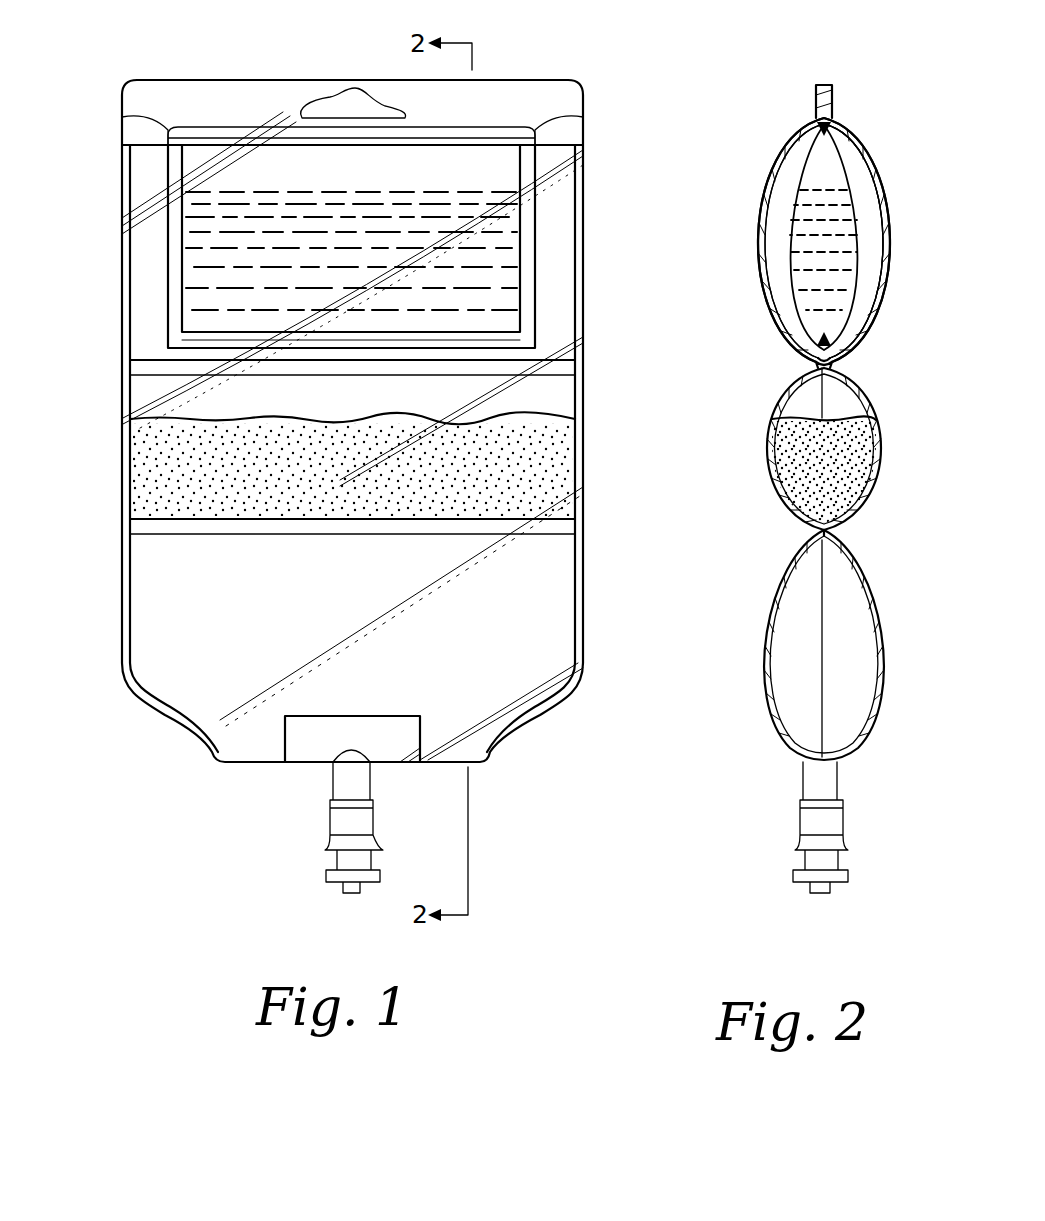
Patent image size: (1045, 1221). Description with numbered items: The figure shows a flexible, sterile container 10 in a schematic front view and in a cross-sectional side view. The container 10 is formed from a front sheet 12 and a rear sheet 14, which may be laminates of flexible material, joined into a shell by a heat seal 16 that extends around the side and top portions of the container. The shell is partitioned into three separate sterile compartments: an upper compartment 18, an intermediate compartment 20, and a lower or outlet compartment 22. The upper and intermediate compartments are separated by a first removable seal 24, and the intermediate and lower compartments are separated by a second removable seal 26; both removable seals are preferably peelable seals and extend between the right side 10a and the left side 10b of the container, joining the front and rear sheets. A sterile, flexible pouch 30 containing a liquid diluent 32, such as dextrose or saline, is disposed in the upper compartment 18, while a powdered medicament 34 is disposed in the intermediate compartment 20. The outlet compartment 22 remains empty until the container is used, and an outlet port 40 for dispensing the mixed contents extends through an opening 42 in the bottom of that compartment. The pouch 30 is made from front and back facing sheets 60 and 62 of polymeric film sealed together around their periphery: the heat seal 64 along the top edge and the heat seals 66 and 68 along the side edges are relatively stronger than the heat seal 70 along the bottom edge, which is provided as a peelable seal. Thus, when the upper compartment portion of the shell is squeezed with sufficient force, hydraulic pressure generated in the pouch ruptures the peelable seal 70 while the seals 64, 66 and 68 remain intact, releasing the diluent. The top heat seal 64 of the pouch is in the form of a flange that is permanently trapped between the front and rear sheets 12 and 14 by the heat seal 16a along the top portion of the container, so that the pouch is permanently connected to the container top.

In FIG. 1, the container 10 is at (114, 68).
In FIG. 2, the container 10 is at (758, 116).
In FIG. 1, the right side 10a is at (584, 484).
In FIG. 1, the left side 10b is at (122, 487).
In FIG. 2, the front sheet 12 is at (760, 287).
In FIG. 2, the rear sheet 14 is at (890, 268).
In FIG. 1, the heat seal 16 is at (122, 340).
In FIG. 2, the heat seal 16 is at (840, 403).
In FIG. 1, the heat seal along the top portion 16a is at (222, 138).
In FIG. 2, the heat seal along the top portion 16a is at (832, 103).
In FIG. 1, the upper compartment 18 is at (558, 222).
In FIG. 2, the upper compartment 18 is at (858, 180).
In FIG. 1, the intermediate compartment 20 is at (152, 388).
In FIG. 1, the lower or outlet compartment 22 is at (540, 588).
In FIG. 2, the lower or outlet compartment 22 is at (836, 600).
In FIG. 1, the first removable seal 24 is at (245, 370).
In FIG. 1, the second removable seal 26 is at (222, 532).
In FIG. 1, the pouch 30 is at (165, 240).
In FIG. 2, the pouch 30 is at (858, 225).
In FIG. 2, the liquid diluent 32 is at (772, 205).
In FIG. 1, the powdered medicament 34 is at (525, 484).
In FIG. 2, the powdered medicament 34 is at (836, 455).
In FIG. 1, the outlet port 40 is at (338, 816).
In FIG. 2, the outlet port 40 is at (802, 820).
In FIG. 1, the opening 42 is at (310, 758).
In FIG. 1, the front facing sheet 60 is at (498, 290).
In FIG. 2, the front facing sheet 60 is at (775, 182).
In FIG. 2, the back facing sheet 62 is at (856, 156).
In FIG. 1, the top heat seal 64 is at (495, 140).
In FIG. 2, the top heat seal 64 is at (834, 130).
In FIG. 1, the side heat seal 66 is at (175, 275).
In FIG. 1, the side heat seal 68 is at (525, 258).
In FIG. 1, the peelable seal 70 is at (495, 345).
In FIG. 2, the peelable seal 70 is at (855, 335).